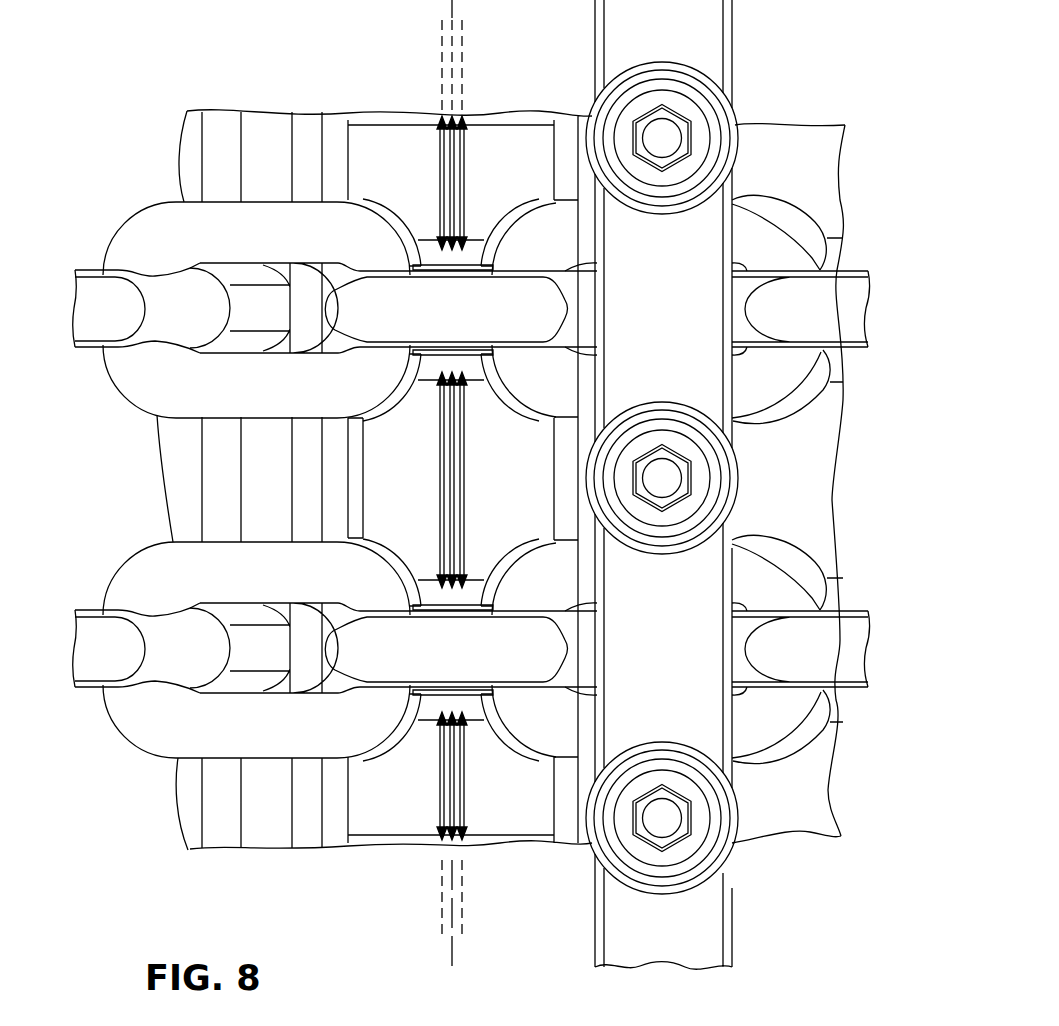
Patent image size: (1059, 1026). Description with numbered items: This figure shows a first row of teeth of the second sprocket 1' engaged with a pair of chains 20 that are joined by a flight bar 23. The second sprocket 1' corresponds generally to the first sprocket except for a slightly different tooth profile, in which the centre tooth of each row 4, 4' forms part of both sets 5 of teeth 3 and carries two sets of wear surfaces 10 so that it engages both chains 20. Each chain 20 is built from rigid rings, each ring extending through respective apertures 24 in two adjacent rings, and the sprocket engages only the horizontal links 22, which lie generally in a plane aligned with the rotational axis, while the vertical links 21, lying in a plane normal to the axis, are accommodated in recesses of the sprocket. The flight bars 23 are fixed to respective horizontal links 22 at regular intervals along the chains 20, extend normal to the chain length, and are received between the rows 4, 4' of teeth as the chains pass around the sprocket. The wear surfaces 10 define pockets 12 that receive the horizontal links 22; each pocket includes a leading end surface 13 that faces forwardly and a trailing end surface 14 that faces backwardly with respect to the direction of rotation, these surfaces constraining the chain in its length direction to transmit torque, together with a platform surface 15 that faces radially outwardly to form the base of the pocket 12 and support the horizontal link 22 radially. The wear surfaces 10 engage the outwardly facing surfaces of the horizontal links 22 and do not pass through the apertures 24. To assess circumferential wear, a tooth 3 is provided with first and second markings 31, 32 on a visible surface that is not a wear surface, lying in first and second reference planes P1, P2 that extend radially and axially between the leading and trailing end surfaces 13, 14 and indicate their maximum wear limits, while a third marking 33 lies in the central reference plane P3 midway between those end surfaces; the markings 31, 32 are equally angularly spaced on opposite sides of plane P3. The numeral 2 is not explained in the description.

The second sprocket 1' is at (821, 448).
The rail foot 2 is at (770, 828).
The teeth 3 is at (471, 183).
The row of teeth 4 is at (790, 76).
The row of teeth 4' is at (480, 56).
The set of teeth 5 is at (142, 172).
The wear surfaces 10 is at (383, 216).
The pockets 12 is at (742, 187).
The leading end surfaces 13 is at (798, 405).
The trailing end surfaces 14 is at (508, 395).
The platform surface 15 is at (503, 257).
The chains 20 is at (92, 241).
The vertical links 21 is at (88, 344).
The horizontal links 22 is at (148, 380).
The flight bars 23 is at (712, 928).
The apertures 24 is at (308, 268).
The first marking 31 is at (432, 94).
The second marking 32 is at (452, 478).
The third marking 33 is at (462, 478).
The first reference plane P1 is at (443, 937).
The second reference plane P2 is at (462, 915).
The central reference plane P3 is at (453, 962).